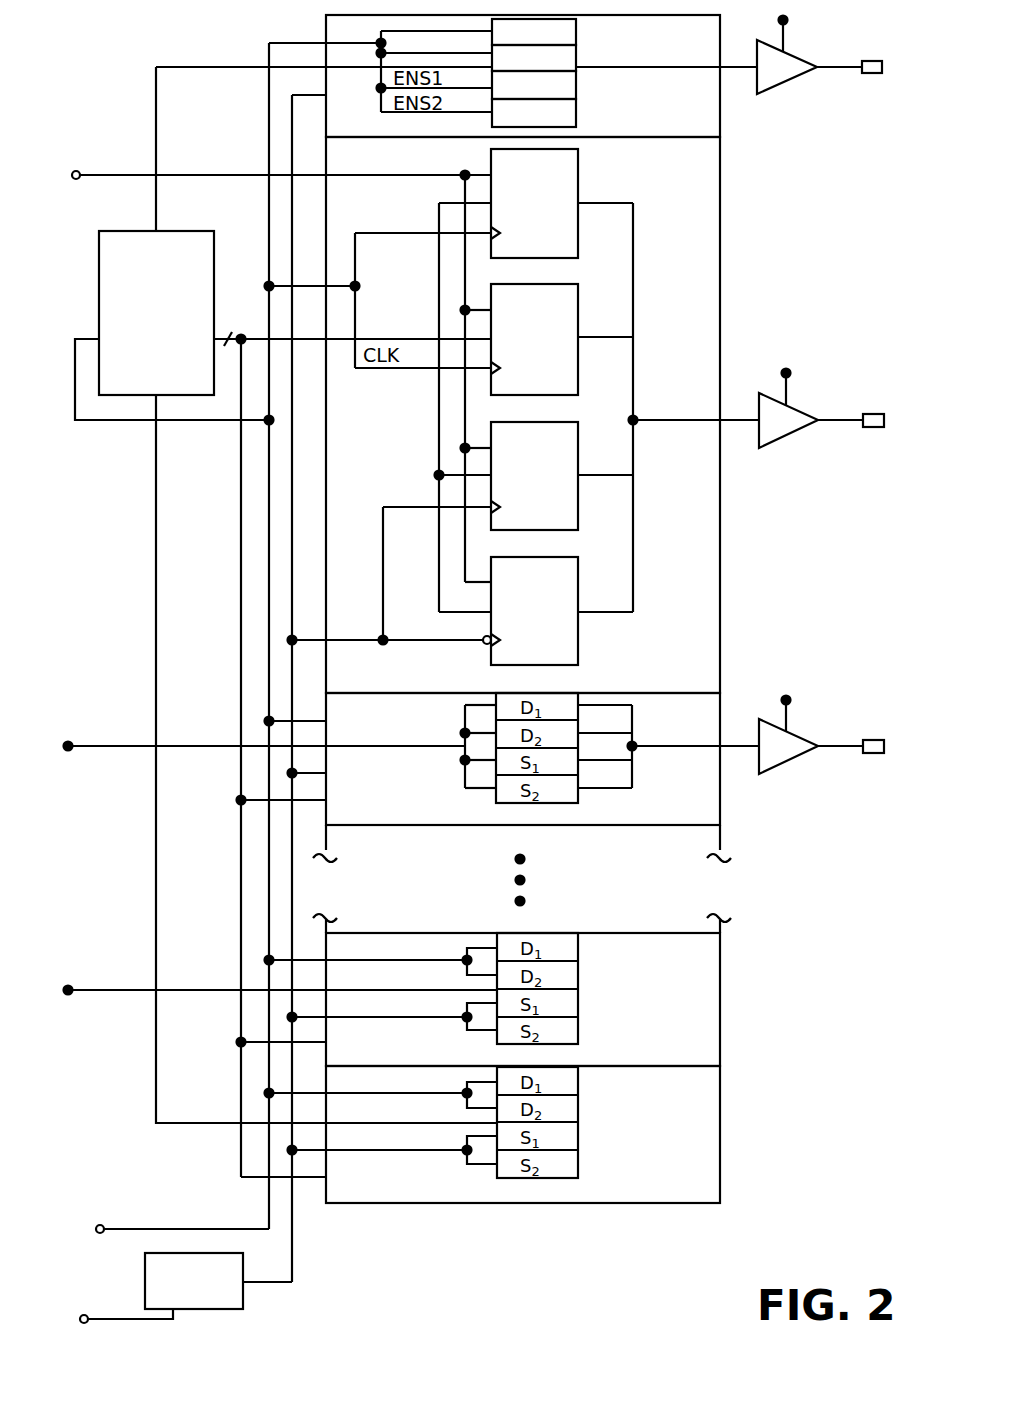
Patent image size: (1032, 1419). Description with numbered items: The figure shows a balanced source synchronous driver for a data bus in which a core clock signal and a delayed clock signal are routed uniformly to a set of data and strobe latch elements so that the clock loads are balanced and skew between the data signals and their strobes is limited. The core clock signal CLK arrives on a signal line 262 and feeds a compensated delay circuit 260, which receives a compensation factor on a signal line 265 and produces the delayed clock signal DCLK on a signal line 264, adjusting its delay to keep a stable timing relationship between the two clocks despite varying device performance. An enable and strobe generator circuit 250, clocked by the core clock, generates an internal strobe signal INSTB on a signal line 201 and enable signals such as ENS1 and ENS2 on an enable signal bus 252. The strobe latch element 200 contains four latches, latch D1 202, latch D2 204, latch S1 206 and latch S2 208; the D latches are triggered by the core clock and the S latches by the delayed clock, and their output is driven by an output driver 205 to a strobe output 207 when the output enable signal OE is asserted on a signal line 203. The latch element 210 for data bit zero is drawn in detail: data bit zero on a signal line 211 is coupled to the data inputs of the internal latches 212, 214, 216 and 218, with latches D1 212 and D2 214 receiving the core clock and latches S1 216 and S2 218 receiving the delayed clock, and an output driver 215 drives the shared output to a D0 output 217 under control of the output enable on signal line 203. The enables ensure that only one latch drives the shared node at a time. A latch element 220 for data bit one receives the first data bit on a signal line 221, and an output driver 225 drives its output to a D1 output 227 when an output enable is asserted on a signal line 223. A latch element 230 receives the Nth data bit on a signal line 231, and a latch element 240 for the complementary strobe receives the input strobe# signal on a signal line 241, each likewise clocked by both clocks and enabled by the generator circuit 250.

The latch element 200 is at (697, 134).
The signal line 201 is at (156, 95).
The latch D1 202 is at (578, 30).
The signal line 203 is at (783, 35).
The latch D2 204 is at (578, 56).
The output driver 205 is at (786, 94).
The latch S1 206 is at (578, 84).
The strobe output 207 is at (872, 74).
The latch S2 208 is at (578, 112).
The latch element 210 is at (694, 691).
The signal line 211 is at (104, 178).
The latch D1 212 is at (570, 225).
The latch D2 214 is at (570, 360).
The output driver 215 is at (788, 448).
The latch S1 216 is at (570, 497).
The D0 output 217 is at (873, 428).
The latch S2 218 is at (570, 632).
The latch element 220 is at (694, 823).
The signal line 221 is at (92, 749).
The signal line 223 is at (786, 714).
The output driver 225 is at (788, 774).
The D1 output 227 is at (873, 754).
The latch element 230 is at (694, 1063).
The signal line 231 is at (92, 993).
The latch element 240 is at (694, 1200).
The signal line 241 is at (168, 1130).
The enable and strobe generator circuit 250 is at (197, 385).
The enable signal bus 252 is at (241, 575).
The compensated delay circuit 260 is at (240, 1303).
The signal line 262 is at (152, 1232).
The signal line 264 is at (258, 1286).
The signal line 265 is at (176, 1322).